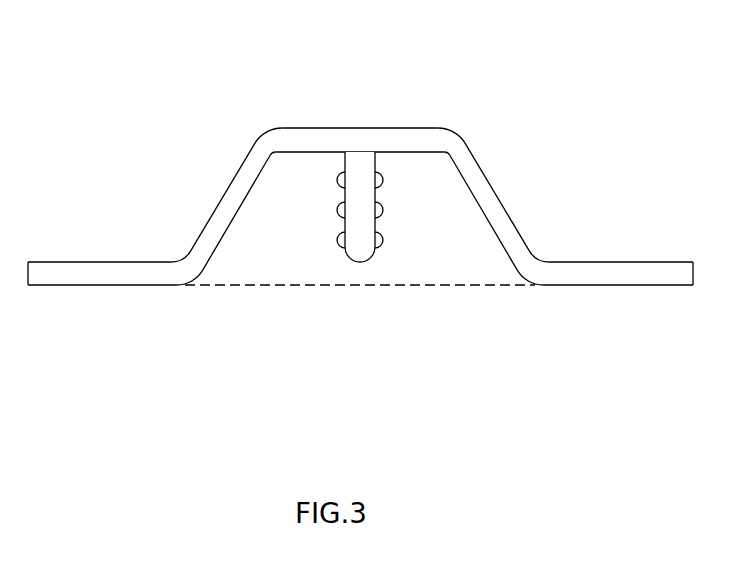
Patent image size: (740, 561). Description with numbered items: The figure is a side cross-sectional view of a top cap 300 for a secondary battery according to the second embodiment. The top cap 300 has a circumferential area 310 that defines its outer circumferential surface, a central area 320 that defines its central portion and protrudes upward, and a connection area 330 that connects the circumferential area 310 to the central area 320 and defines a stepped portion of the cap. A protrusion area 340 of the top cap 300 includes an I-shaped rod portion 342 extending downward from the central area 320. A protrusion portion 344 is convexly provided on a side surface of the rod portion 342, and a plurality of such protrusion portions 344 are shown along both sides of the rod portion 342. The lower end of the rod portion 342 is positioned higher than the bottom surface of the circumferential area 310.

The top cap 300 is at (360, 192).
The circumferential area 310 is at (100, 272).
The central area 320 is at (398, 127).
The connection area 330 is at (240, 228).
The protrusion area 340 is at (370, 255).
The rod portion 342 is at (357, 247).
The protrusion portion 344 is at (387, 217).